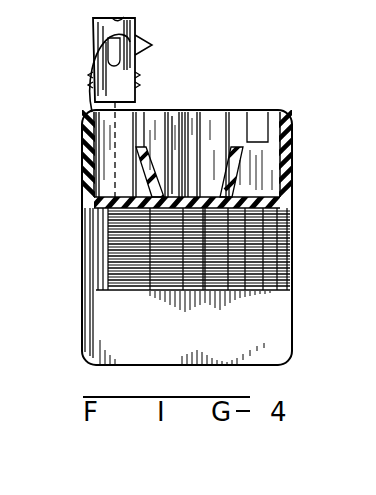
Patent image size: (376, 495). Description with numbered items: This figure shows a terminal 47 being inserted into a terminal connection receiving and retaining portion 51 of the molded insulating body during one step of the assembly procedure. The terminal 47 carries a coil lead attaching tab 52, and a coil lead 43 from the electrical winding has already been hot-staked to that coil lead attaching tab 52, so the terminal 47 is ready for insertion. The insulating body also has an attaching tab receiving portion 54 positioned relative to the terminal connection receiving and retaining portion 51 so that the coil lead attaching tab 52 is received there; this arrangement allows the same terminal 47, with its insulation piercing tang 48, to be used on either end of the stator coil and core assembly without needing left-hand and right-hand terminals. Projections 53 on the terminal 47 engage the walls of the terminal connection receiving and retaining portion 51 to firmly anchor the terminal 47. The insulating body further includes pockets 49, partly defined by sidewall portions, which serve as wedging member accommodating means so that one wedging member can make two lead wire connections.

The coil lead 43 is at (88, 82).
The terminal 47 is at (125, 68).
The insulation piercing tang 48 is at (150, 40).
The pocket 49 is at (190, 115).
The terminal connection receiving and retaining portion 51 is at (105, 156).
The coil lead attaching tab 52 is at (112, 18).
The projections 53 is at (136, 90).
The attaching tab receiving portion 54 is at (260, 118).